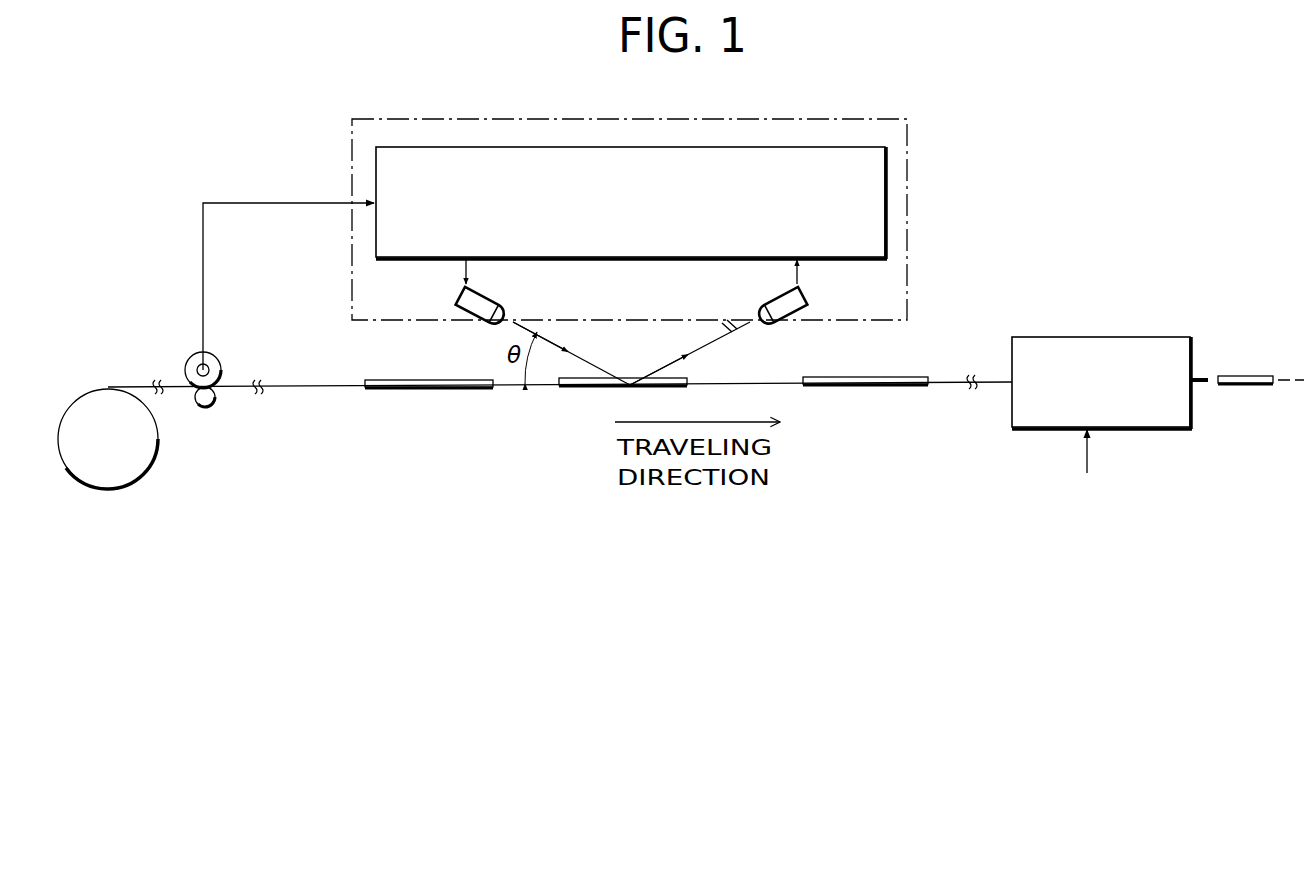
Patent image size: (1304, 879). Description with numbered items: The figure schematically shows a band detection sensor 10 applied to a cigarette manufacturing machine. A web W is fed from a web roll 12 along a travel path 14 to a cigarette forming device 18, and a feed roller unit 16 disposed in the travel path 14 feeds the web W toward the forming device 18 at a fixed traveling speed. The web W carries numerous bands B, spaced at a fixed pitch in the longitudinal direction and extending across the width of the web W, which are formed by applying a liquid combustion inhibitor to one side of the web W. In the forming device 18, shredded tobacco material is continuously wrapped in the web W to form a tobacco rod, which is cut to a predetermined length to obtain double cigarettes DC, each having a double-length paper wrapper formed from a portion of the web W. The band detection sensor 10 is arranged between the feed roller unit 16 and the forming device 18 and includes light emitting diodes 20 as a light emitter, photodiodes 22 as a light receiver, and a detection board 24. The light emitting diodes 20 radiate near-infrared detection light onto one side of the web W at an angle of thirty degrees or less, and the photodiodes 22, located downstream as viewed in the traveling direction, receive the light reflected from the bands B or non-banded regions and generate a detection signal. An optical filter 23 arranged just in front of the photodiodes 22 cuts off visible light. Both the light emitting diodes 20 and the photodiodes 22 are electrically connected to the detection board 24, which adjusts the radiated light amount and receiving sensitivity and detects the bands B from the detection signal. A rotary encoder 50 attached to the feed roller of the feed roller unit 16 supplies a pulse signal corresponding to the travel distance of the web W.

The band detection sensor 10 is at (908, 132).
The web roll 12 is at (108, 477).
The travel path 14 is at (512, 388).
The feed roller unit 16 is at (229, 410).
The cigarette forming device 18 is at (1047, 337).
The light emitting diodes 20 is at (468, 298).
The photodiodes 22 is at (797, 297).
The optical filter 23 is at (722, 322).
The detection board 24 is at (886, 168).
The rotary encoder 50 is at (205, 368).
The web W is at (307, 385).
The bands B is at (417, 382).
The double cigarettes DC is at (1247, 375).